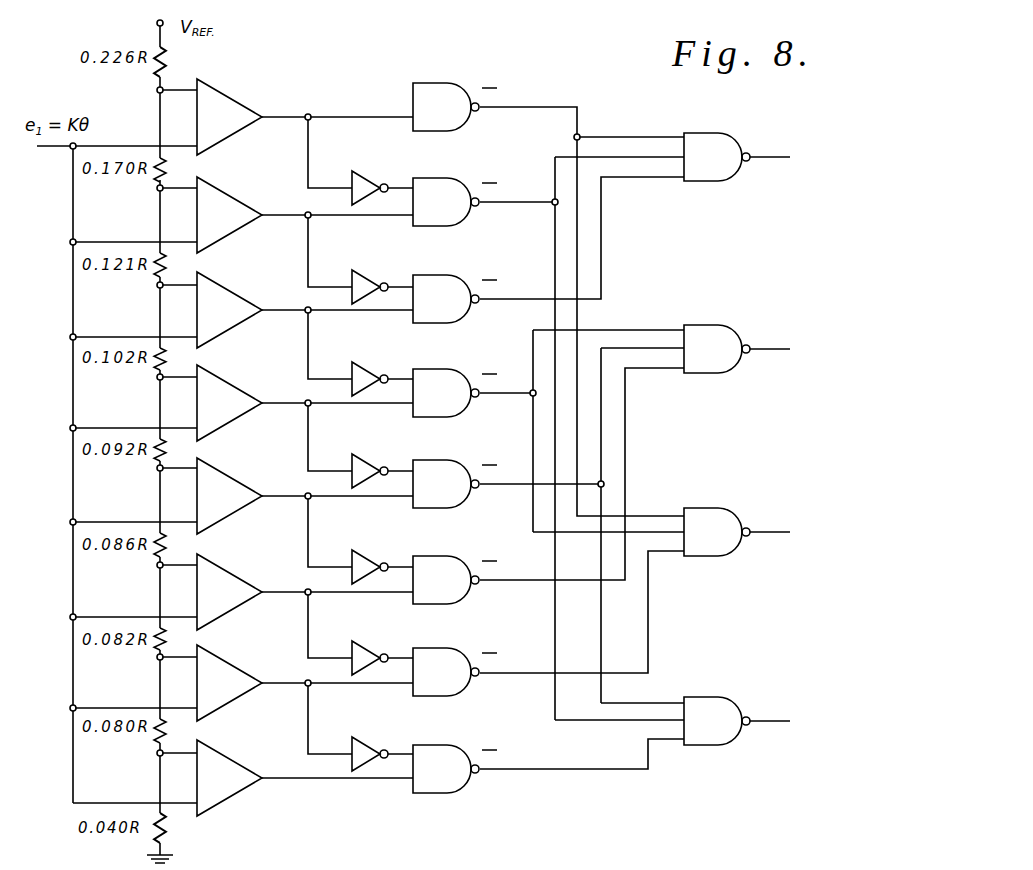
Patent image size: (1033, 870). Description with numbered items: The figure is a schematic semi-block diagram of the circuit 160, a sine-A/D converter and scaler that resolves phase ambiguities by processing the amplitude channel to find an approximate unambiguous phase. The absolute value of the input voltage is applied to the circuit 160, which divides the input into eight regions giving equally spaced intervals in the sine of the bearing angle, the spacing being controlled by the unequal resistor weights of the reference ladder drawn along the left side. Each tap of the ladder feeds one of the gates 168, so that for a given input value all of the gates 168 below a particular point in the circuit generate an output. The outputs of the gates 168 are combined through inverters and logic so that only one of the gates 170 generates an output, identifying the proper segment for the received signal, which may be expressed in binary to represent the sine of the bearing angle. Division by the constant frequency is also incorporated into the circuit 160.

The circuit 160 is at (370, 89).
The gates 168 is at (225, 93).
The gates 170 is at (445, 83).